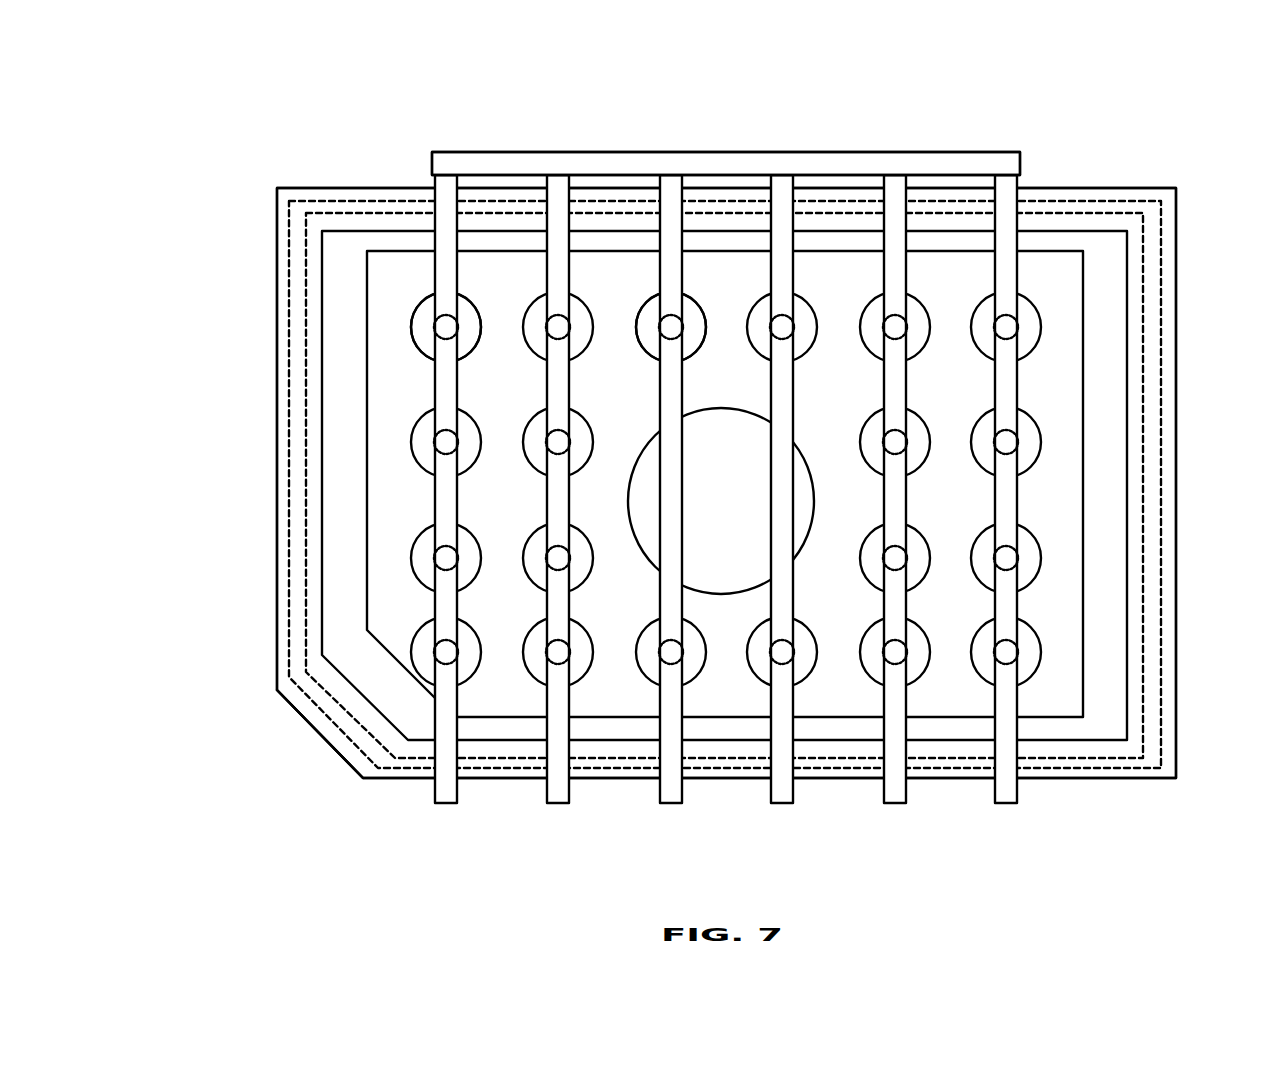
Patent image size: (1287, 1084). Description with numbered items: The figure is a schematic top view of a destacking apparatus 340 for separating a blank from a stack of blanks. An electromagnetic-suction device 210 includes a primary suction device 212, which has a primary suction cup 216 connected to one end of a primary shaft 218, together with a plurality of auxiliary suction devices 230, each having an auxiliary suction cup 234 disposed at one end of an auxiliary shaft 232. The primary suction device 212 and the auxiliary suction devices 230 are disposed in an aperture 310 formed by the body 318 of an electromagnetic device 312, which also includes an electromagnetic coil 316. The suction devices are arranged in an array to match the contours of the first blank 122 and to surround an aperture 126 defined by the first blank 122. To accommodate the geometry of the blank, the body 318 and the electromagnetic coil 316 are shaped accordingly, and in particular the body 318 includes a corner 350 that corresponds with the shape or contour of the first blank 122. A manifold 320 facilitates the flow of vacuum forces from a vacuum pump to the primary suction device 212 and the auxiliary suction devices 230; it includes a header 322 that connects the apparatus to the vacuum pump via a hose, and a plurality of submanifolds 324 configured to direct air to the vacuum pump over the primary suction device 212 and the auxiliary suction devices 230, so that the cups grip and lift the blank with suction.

The first blank 122 is at (367, 413).
The aperture 126 is at (643, 570).
The electromagnetic-suction device 210 is at (726, 366).
The primary suction device 212 is at (692, 278).
The primary suction cup 216 is at (660, 317).
The primary shaft 218 is at (650, 302).
The auxiliary suction device 230 is at (421, 278).
The auxiliary shaft 232 is at (411, 338).
The auxiliary suction cup 234 is at (434, 327).
The aperture 310 is at (1114, 377).
The electromagnetic device 312 is at (771, 466).
The electromagnetic coil 316 is at (772, 485).
The body 318 is at (777, 480).
The manifold 320 is at (726, 119).
The header 322 is at (726, 137).
The submanifold 324 is at (766, 451).
The destacking apparatus 340 is at (749, 421).
The corner 350 is at (262, 742).